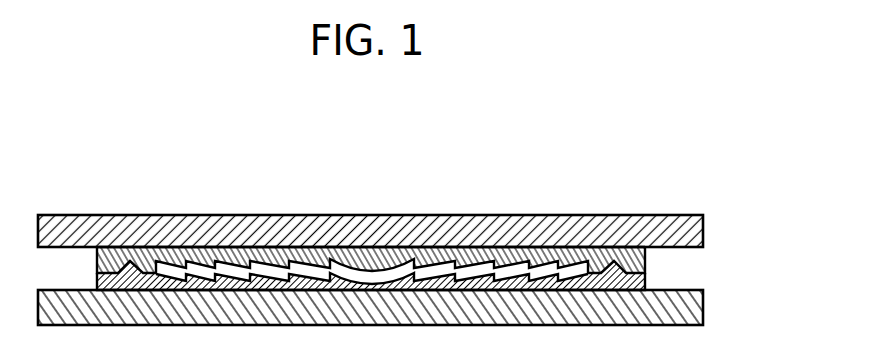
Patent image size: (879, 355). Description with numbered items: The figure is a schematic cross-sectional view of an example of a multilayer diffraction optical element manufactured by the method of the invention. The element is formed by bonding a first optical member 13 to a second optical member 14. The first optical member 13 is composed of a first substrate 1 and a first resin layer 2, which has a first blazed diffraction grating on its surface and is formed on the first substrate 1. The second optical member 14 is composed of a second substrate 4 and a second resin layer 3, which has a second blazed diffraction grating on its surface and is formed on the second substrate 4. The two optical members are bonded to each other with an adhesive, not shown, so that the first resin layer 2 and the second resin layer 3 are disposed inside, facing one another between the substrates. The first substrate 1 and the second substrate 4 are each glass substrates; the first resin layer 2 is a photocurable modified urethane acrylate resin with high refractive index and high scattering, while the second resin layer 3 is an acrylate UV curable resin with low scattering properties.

The first substrate 1 is at (704, 229).
The first resin layer 2 is at (645, 262).
The second resin layer 3 is at (646, 280).
The second substrate 4 is at (704, 306).
The first optical member 13 is at (753, 204).
The second optical member 14 is at (753, 272).